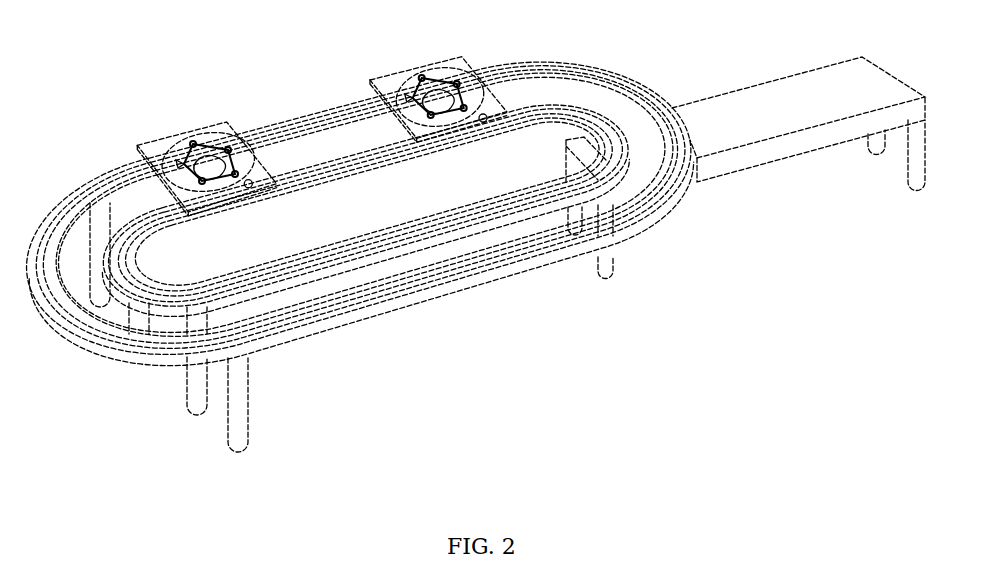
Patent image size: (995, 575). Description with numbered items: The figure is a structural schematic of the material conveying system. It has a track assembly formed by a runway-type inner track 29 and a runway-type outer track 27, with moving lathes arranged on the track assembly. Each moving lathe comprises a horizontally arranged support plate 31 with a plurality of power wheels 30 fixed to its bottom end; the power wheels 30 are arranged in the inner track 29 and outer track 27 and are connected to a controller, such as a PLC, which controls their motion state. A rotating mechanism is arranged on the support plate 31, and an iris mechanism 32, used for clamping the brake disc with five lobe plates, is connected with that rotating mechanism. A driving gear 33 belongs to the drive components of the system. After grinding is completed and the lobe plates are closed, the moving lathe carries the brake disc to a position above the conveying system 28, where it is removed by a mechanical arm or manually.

The outer track 27 is at (563, 86).
The conveying system 28 is at (783, 154).
The inner track 29 is at (403, 257).
The power wheel 30 is at (187, 217).
The support plate 31 is at (159, 140).
The iris mechanism 32 is at (219, 141).
The driving gear 33 is at (252, 176).